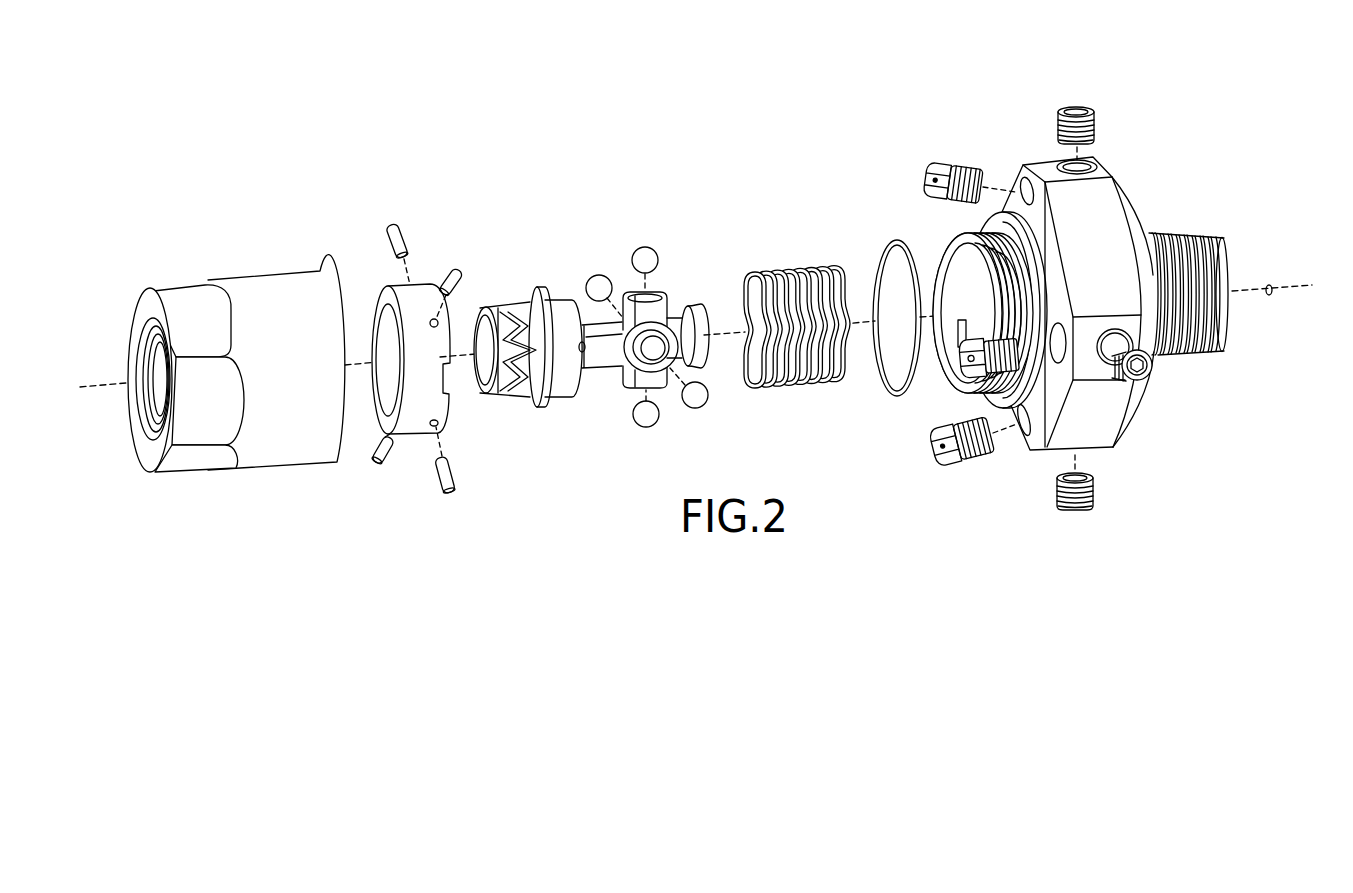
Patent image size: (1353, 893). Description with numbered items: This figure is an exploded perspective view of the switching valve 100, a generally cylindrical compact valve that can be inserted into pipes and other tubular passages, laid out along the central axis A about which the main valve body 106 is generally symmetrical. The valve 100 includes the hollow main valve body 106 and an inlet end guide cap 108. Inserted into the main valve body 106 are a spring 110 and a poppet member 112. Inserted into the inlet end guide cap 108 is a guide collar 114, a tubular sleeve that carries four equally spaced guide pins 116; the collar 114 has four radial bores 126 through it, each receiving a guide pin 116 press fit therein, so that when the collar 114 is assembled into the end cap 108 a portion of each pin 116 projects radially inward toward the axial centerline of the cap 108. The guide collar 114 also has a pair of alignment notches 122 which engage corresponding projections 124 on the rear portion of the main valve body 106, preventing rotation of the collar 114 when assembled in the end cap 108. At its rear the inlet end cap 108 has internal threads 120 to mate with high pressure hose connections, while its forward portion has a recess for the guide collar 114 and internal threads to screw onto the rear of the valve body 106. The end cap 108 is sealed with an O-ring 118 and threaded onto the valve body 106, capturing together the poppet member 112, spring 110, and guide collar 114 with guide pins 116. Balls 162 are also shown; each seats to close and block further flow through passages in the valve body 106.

The switching valve 100 is at (863, 165).
The main valve body 106 is at (1125, 190).
The inlet end guide cap 108 is at (258, 270).
The spring 110 is at (790, 266).
The poppet member 112 is at (580, 390).
The guide collar 114 is at (380, 291).
The guide pins 116 is at (446, 267).
The O-ring 118 is at (886, 380).
The internal threads 120 is at (151, 432).
The alignment notches 122 is at (447, 382).
The projections 124 is at (956, 356).
The radial bores 126 is at (438, 319).
The ball 162 is at (646, 247).
The central axis A is at (1268, 285).